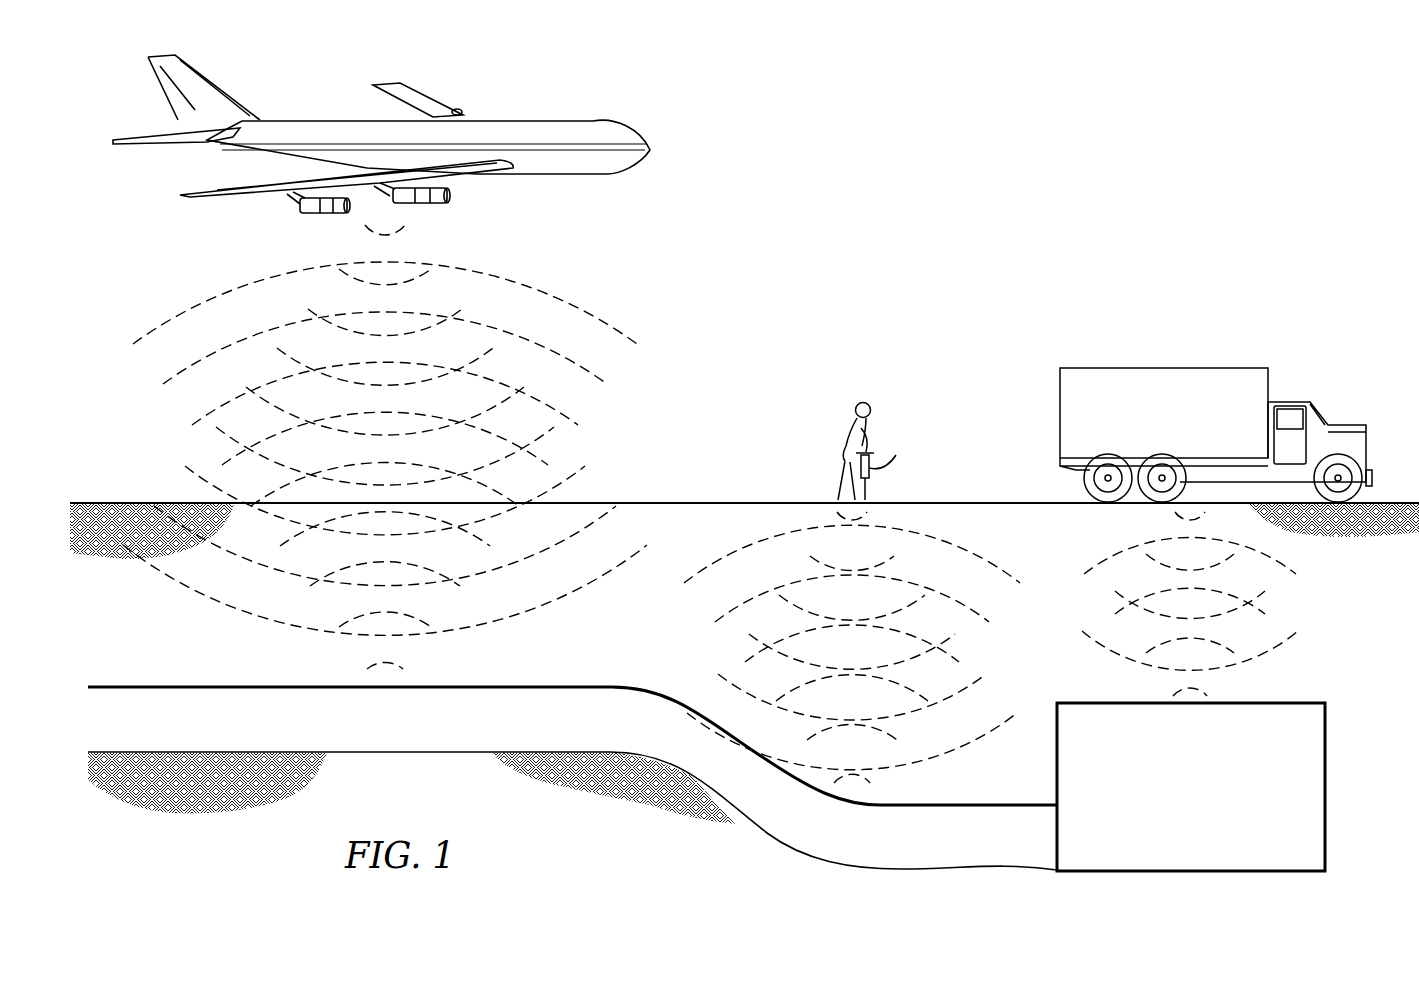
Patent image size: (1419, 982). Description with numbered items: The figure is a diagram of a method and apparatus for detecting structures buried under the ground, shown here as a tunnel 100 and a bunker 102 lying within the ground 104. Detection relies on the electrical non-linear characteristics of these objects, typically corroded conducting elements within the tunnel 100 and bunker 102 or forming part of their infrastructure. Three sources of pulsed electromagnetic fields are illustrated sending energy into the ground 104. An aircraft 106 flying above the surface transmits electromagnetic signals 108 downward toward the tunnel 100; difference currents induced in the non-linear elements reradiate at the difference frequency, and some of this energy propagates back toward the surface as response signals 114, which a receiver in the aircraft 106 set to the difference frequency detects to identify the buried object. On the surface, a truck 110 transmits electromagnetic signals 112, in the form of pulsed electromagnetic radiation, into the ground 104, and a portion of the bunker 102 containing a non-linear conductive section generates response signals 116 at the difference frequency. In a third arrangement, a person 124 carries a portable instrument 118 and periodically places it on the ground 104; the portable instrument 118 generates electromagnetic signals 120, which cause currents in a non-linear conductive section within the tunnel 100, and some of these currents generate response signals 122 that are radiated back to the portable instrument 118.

The tunnel 100 is at (463, 734).
The bunker 102 is at (1210, 817).
The ground 104 is at (620, 662).
The aircraft 106 is at (333, 120).
The electromagnetic signals 108 is at (198, 593).
The truck 110 is at (1192, 367).
The electromagnetic signals 112 is at (1110, 650).
The response signals 114 is at (553, 295).
The response signals 116 is at (1275, 555).
The portable instrument 118 is at (875, 472).
The electromagnetic signals 120 is at (968, 745).
The response signals 122 is at (737, 600).
The person 124 is at (863, 401).